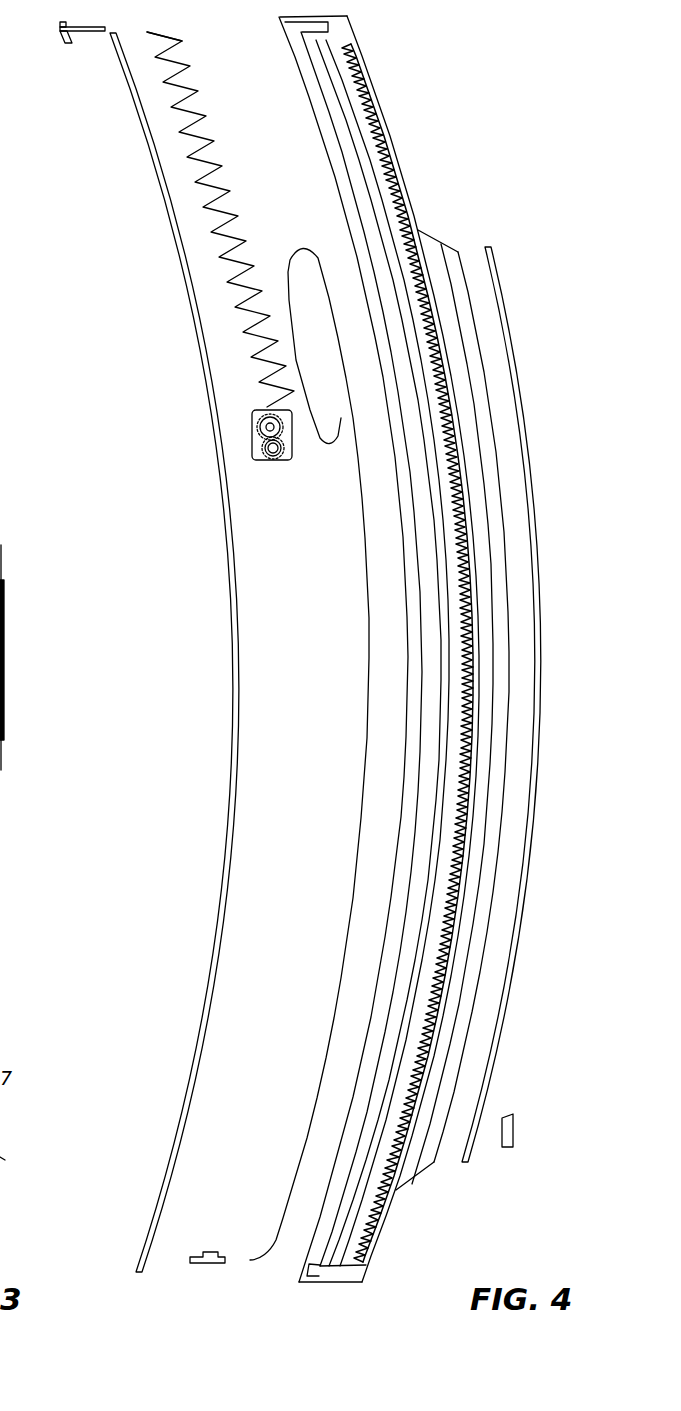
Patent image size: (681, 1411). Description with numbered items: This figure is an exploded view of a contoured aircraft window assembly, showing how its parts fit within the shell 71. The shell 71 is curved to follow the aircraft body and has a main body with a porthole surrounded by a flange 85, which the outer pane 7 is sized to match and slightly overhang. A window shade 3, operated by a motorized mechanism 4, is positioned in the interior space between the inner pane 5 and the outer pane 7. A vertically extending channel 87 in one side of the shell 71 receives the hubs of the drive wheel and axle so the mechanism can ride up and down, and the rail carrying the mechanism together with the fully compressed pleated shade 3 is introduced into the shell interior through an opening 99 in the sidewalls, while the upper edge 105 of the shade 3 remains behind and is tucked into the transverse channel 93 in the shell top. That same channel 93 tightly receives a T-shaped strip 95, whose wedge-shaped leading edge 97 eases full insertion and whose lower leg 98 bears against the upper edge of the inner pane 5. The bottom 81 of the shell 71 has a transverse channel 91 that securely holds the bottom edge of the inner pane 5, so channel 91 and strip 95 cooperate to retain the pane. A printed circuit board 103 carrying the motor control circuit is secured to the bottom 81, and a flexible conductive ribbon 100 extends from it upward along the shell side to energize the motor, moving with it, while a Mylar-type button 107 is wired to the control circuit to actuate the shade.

The window shade 3 is at (202, 200).
The motorized mechanism 4 is at (263, 468).
The inner pane 5 is at (222, 887).
The outer pane 7 is at (498, 1047).
The shell 71 is at (412, 203).
The bottom 81 is at (388, 1252).
The flange 85 is at (437, 247).
The channel 87 is at (440, 548).
The transverse channel 91 is at (313, 1267).
The transverse channel 93 is at (300, 25).
The strip 95 is at (80, 25).
The wedge-shaped leading edge 97 is at (105, 28).
The lower leg 98 is at (58, 28).
The opening 99 is at (318, 67).
The flexible conductive ribbon 100 is at (366, 790).
The printed circuit board 103 is at (197, 1264).
The upper edge 105 is at (184, 35).
The button 107 is at (513, 1134).